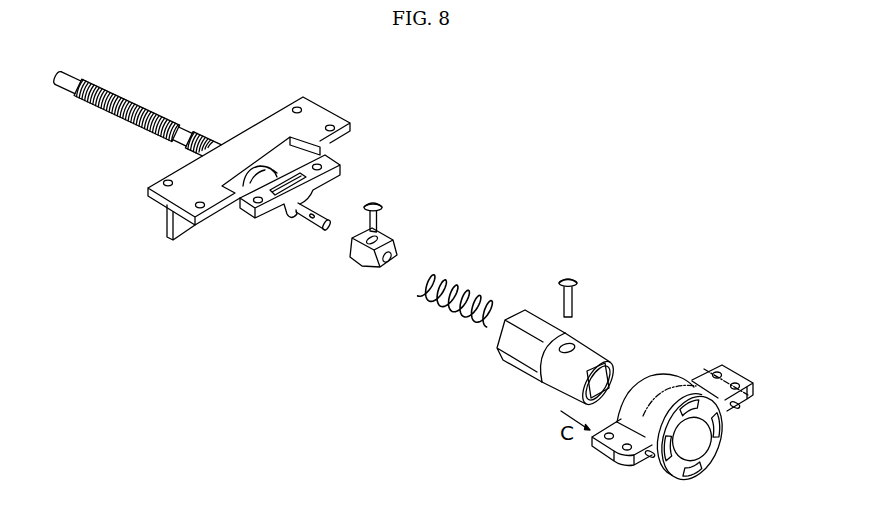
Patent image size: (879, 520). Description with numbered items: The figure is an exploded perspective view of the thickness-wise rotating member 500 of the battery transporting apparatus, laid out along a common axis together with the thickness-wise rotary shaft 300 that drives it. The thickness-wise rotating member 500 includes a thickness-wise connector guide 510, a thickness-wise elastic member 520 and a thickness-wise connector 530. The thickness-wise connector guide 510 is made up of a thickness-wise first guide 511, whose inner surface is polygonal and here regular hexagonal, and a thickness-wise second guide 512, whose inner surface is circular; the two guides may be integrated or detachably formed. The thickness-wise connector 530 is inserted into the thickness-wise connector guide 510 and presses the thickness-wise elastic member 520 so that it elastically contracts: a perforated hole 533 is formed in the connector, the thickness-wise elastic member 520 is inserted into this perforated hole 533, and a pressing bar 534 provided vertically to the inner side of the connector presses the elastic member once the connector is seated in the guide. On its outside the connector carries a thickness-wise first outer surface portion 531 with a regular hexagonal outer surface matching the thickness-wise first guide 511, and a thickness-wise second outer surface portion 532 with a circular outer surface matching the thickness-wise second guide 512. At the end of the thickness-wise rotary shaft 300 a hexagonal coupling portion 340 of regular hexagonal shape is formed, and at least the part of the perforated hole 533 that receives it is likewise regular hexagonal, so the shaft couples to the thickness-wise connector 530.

The thickness-wise rotary shaft 300 is at (147, 88).
The hexagonal coupling portion 340 is at (362, 257).
The thickness-wise rotating member 500 is at (623, 206).
The thickness-wise connector guide 510 is at (689, 381).
The thickness-wise first guide 511 is at (667, 381).
The thickness-wise second guide 512 is at (721, 430).
The thickness-wise elastic member 520 is at (442, 315).
The thickness-wise connector 530 is at (523, 374).
The thickness-wise first outer surface portion 531 is at (521, 351).
The thickness-wise second outer surface portion 532 is at (554, 381).
The perforated hole 533 is at (601, 382).
The pressing bar 534 is at (571, 279).